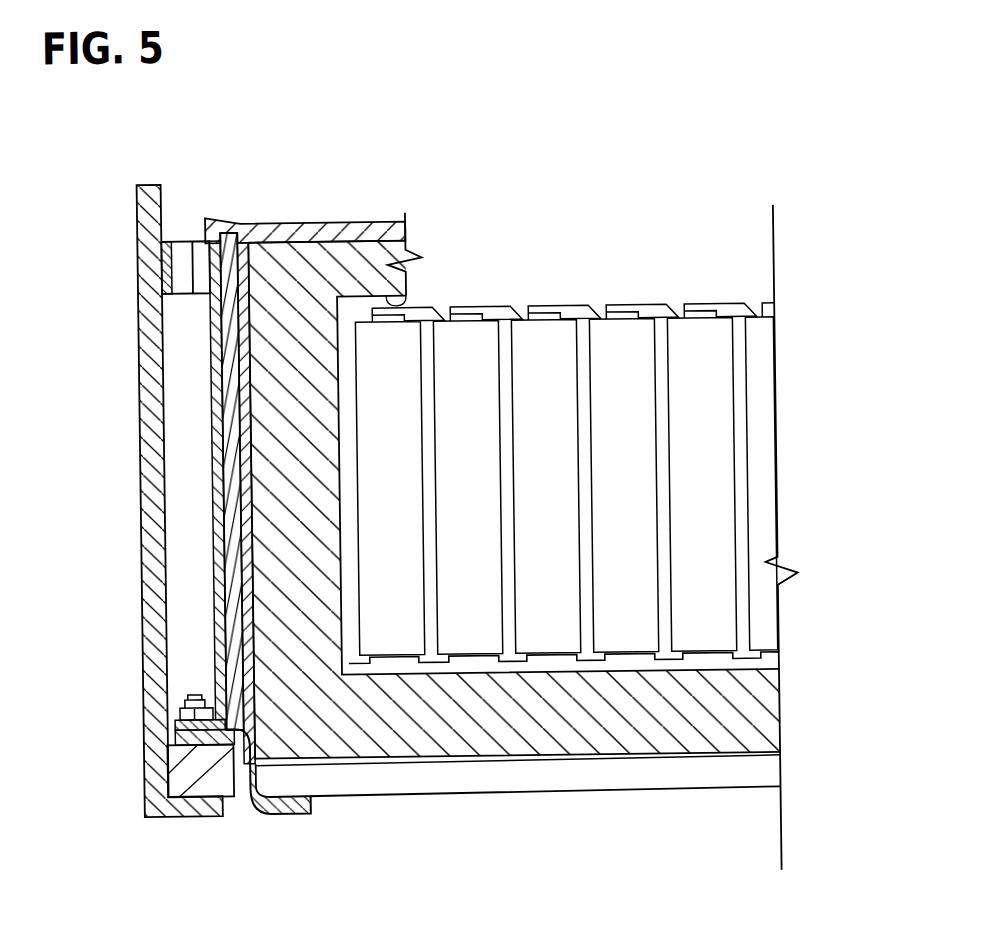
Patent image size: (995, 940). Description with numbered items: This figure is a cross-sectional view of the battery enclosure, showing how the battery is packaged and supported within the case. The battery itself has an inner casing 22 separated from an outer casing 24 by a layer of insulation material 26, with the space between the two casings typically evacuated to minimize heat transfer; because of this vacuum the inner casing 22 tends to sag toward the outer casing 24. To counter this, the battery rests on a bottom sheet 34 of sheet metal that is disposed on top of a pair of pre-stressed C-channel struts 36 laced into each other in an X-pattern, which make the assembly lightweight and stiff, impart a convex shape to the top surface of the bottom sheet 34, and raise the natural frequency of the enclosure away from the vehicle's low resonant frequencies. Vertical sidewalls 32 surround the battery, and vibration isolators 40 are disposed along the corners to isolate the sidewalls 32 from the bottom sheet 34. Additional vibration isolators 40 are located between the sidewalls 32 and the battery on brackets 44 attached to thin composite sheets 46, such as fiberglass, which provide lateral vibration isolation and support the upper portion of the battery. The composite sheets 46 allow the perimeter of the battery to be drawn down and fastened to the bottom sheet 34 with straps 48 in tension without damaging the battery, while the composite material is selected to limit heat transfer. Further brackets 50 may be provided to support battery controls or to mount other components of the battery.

The inner casing 22 is at (407, 310).
The outer casing 24 is at (337, 249).
The layer of insulation material 26 is at (408, 290).
The sidewalls 32 is at (150, 401).
The bottom sheet 34 is at (757, 759).
The struts 36 is at (606, 794).
The vibration isolators 40 is at (189, 238).
The brackets 44 is at (172, 236).
The composite sheets 46 is at (241, 237).
The straps 48 is at (213, 662).
The brackets 50 is at (286, 814).